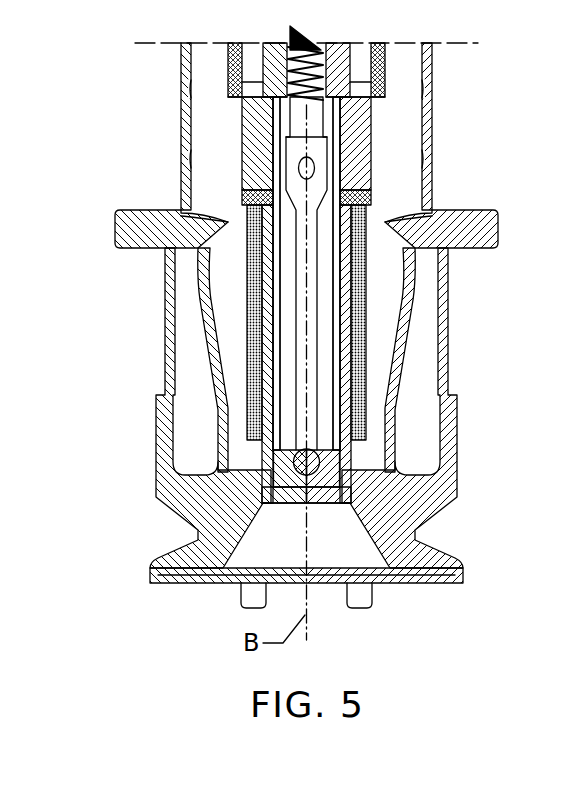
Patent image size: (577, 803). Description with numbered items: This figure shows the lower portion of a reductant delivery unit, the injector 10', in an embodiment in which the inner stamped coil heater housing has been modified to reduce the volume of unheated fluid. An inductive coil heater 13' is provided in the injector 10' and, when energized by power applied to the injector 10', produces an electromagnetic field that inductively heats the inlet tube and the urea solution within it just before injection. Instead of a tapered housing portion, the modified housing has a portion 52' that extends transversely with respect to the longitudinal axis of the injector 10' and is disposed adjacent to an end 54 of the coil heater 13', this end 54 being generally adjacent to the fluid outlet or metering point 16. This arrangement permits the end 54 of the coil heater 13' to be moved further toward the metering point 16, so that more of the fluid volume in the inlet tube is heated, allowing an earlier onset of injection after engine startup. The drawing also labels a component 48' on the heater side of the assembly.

The injector 10' is at (331, 264).
The inductive coil heater 13' is at (183, 322).
The coil bobbin 48' is at (427, 322).
The end of the coil heater 54 is at (215, 440).
The portion of the housing 52' is at (277, 428).
The metering point 16 is at (303, 478).